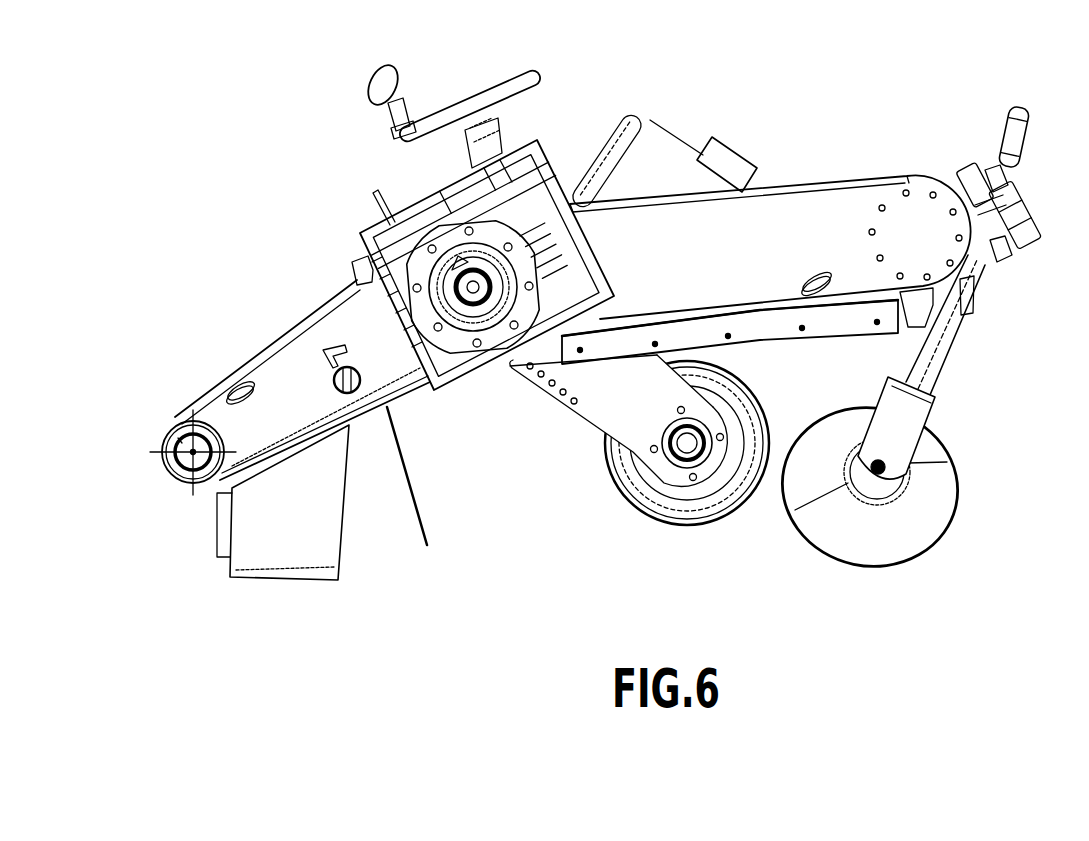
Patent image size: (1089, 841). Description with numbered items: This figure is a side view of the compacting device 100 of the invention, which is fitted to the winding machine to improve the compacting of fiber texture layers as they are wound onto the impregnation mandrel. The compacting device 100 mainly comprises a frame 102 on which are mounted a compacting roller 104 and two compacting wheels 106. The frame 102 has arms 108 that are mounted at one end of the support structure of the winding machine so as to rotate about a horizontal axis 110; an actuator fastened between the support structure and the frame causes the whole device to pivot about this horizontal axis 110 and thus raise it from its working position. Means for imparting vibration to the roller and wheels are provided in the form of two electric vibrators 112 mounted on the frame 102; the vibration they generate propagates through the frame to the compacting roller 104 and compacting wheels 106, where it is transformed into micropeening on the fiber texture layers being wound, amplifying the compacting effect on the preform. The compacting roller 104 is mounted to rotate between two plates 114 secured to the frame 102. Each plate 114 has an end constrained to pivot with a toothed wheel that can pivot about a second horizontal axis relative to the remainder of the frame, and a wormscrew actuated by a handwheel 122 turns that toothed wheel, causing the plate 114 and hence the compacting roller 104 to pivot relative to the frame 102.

The compacting device 100 is at (340, 201).
The frame 102 is at (838, 172).
The compacting roller 104 is at (685, 512).
The compacting wheel 106 is at (957, 489).
The arm 108 is at (300, 350).
The horizontal axis 110 is at (162, 448).
The electric vibrator 112 is at (650, 150).
The plate 114 is at (600, 402).
The handwheel 122 is at (488, 96).